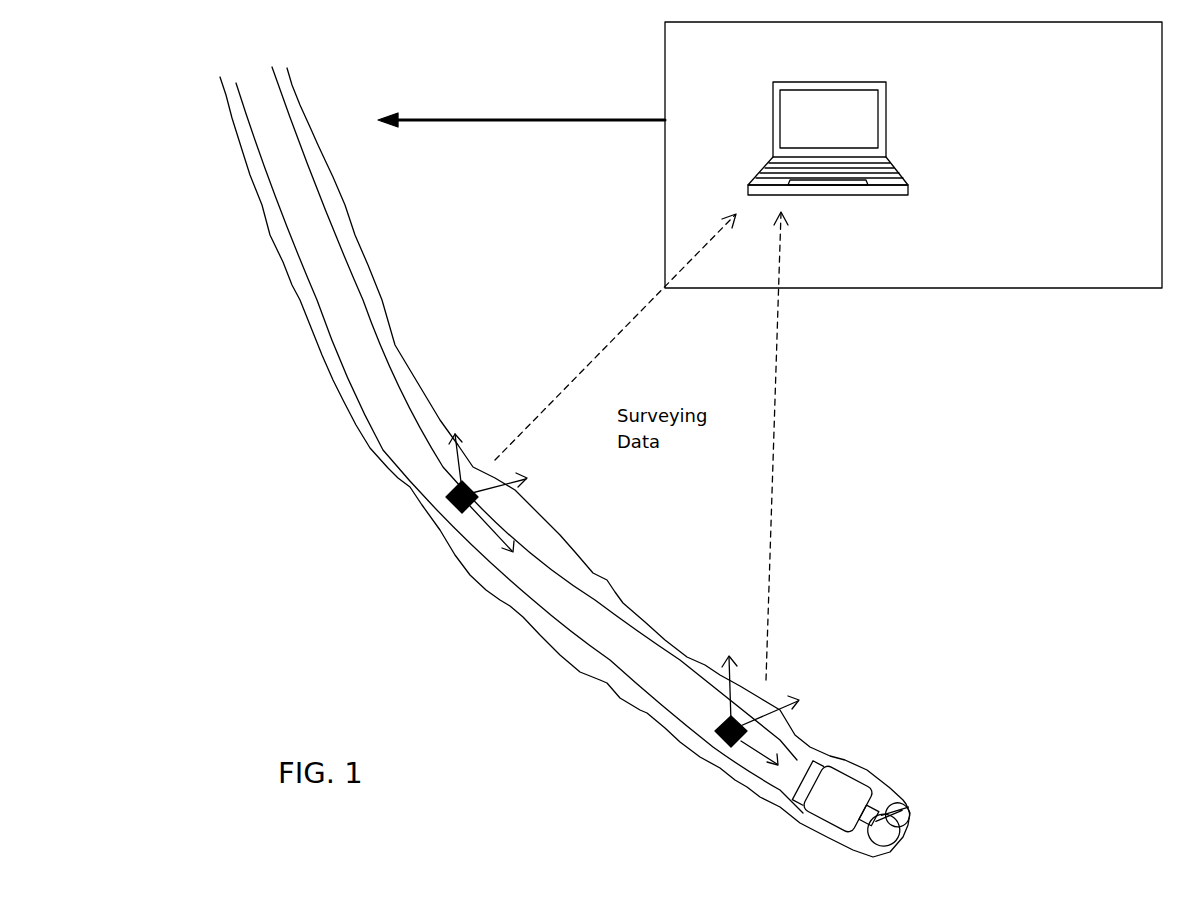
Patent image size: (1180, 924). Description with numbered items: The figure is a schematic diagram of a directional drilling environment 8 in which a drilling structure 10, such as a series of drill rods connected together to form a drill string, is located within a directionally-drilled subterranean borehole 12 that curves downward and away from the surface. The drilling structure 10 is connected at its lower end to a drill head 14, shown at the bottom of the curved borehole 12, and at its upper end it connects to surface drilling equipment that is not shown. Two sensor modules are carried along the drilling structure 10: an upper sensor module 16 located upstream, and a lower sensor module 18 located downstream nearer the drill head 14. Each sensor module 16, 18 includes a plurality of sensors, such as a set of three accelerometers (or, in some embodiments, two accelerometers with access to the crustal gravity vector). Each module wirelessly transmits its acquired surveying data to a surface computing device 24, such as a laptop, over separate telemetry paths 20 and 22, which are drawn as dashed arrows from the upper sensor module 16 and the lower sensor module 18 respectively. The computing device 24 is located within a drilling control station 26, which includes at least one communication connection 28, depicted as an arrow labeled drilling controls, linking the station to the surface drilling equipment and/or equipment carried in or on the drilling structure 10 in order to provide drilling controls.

The directional drilling environment 8 is at (130, 471).
The drilling structure 10 is at (385, 403).
The directionally-drilled subterranean borehole 12 is at (750, 788).
The drill head 14 is at (853, 787).
The upper sensor module 16 is at (455, 500).
The lower sensor module 18 is at (713, 738).
The telemetry path 20 is at (563, 390).
The telemetry path 22 is at (775, 435).
The surface computing device 24 is at (886, 120).
The drilling control station 26 is at (1035, 288).
The communication connection 28 is at (410, 120).